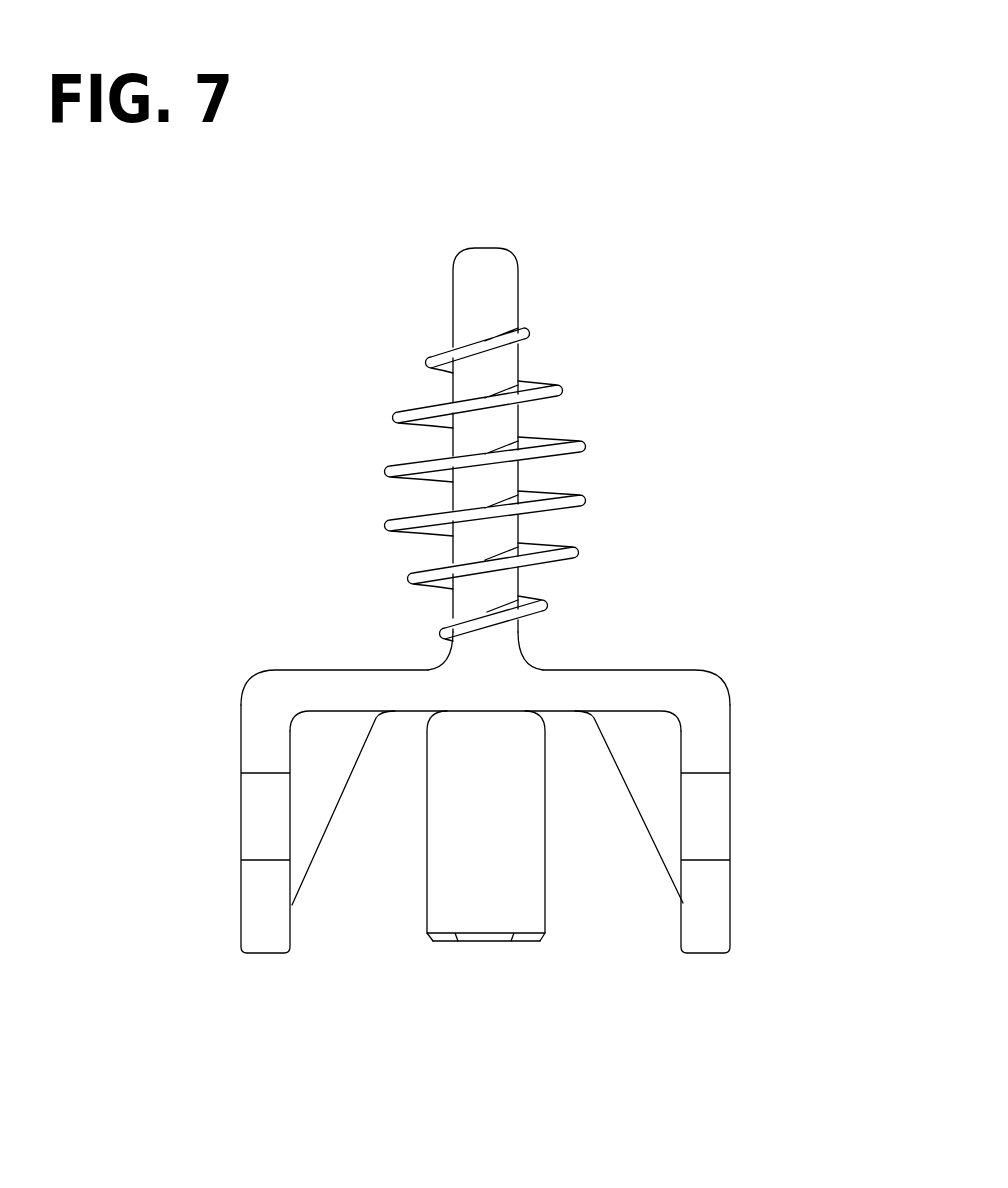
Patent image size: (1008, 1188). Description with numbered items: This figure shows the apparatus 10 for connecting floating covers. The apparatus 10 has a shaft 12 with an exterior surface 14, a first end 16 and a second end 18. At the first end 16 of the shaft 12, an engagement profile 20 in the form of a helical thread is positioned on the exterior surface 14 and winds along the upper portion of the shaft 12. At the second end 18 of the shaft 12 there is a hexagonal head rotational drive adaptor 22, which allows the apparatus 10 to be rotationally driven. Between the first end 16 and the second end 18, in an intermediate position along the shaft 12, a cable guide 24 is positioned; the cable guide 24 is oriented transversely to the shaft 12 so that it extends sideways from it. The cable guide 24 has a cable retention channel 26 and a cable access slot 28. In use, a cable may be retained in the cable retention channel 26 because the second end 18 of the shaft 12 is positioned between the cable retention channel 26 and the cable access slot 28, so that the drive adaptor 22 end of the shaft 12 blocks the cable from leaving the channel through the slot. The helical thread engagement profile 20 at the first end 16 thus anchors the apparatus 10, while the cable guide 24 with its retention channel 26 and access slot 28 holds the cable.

The apparatus 10 is at (472, 640).
The shaft 12 is at (523, 653).
The exterior surface 14 is at (503, 855).
The first end 16 is at (517, 260).
The second end 18 is at (427, 933).
The engagement profile 20 is at (578, 442).
The hexagonal head rotational drive adaptor 22 is at (491, 942).
The cable guide 24 is at (257, 693).
The cable retention channel 26 is at (603, 833).
The cable access slot 28 is at (710, 820).